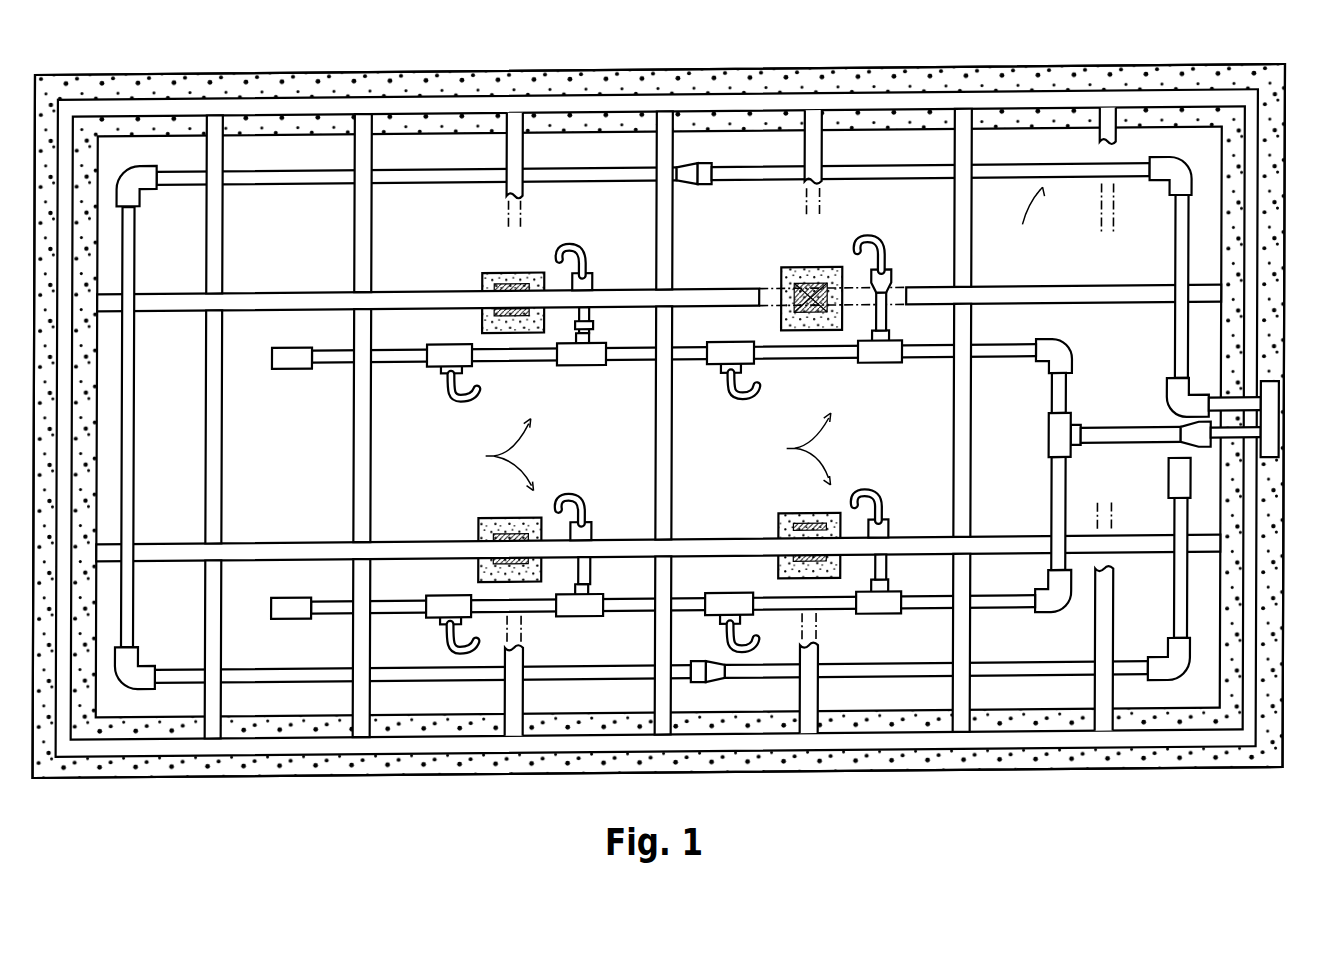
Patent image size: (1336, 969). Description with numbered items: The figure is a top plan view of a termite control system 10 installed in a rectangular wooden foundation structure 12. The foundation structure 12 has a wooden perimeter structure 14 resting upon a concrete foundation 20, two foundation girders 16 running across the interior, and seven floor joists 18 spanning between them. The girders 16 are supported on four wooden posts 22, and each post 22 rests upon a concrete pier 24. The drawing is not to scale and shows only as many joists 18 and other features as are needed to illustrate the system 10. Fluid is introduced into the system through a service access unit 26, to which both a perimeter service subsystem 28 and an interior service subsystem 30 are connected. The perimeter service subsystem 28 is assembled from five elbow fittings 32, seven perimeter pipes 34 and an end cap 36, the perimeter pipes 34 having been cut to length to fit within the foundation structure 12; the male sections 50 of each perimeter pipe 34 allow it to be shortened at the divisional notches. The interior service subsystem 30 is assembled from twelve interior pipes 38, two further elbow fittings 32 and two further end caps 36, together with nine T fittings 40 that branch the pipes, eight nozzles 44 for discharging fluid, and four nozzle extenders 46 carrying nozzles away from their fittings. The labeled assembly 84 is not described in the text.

The termite control system 10 is at (115, 70).
The foundation structure 12 is at (215, 757).
The wooden perimeter structure 14 is at (592, 104).
The foundation girder 16 is at (333, 307).
The floor joist 18 is at (523, 154).
The concrete foundation 20 is at (402, 81).
The wooden post 22 is at (512, 289).
The concrete pier 24 is at (483, 284).
The service access unit 26 is at (1290, 430).
The perimeter service subsystem 28 is at (1014, 215).
The interior service subsystem 30 is at (1083, 476).
The elbow fitting 32 is at (141, 203).
The perimeter pipe 34 is at (453, 186).
The end cap 36 is at (297, 364).
The interior pipe 38 is at (418, 357).
The T fitting 40 is at (442, 369).
The nozzle 44 is at (572, 254).
The nozzle extender 46 is at (592, 285).
The male section 50 is at (591, 332).
The dispensing assembly 84 is at (640, 452).